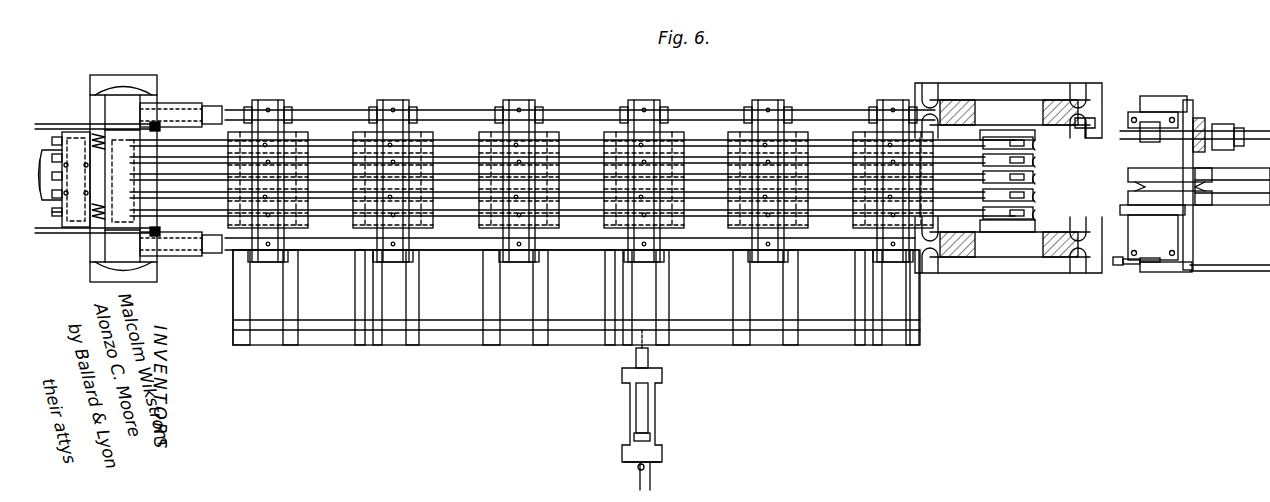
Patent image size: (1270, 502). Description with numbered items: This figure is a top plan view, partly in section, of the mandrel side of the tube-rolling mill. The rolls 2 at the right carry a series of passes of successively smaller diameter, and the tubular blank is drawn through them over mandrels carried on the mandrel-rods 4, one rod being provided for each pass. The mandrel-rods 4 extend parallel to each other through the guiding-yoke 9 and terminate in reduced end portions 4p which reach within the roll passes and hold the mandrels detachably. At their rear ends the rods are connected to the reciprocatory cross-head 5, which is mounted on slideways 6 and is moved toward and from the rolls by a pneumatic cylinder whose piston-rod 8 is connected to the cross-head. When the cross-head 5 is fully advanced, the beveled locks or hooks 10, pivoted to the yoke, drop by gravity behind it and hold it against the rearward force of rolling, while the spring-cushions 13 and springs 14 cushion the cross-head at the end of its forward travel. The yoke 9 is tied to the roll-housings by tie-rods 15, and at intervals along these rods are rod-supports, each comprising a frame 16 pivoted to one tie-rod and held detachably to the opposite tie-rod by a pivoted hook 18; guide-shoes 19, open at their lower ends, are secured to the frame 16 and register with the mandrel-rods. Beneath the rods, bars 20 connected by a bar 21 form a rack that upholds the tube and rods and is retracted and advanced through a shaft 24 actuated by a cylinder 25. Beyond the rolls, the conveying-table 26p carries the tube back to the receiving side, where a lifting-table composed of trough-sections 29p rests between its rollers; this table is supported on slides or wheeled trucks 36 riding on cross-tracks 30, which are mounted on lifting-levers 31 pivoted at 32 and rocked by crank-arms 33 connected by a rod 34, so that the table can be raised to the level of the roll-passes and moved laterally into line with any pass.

The rolls 2 is at (1038, 149).
The mandrel-rods 4 is at (195, 158).
The reduced end portions 4p is at (1036, 178).
The cross-head 5 is at (50, 248).
The slideways 6 is at (50, 196).
The piston-rod 8 is at (40, 166).
The guiding-yoke 9 is at (123, 178).
The locks or hooks 10 is at (44, 122).
The spring-cushions 13 is at (178, 108).
The springs 14 is at (100, 136).
The tie-rods 15 is at (350, 104).
The frame or bar 16 is at (280, 116).
The pivoted lock or hook 18 is at (245, 254).
The guide-shoes 19 is at (478, 140).
The bars 20 is at (290, 290).
The bar 21 is at (830, 338).
The shaft 24 is at (575, 333).
The cylinder 25 is at (630, 473).
The conveying-table 26p is at (1128, 175).
The trough-sections 29p is at (1196, 204).
The cross rails or tracks 30 is at (1192, 112).
The lifting-levers 31 is at (1165, 272).
The pivot 32 is at (1152, 265).
The crank-arms 33 is at (1118, 268).
The rod 34 is at (1212, 274).
The slides or wheeled trucks 36 is at (1185, 214).